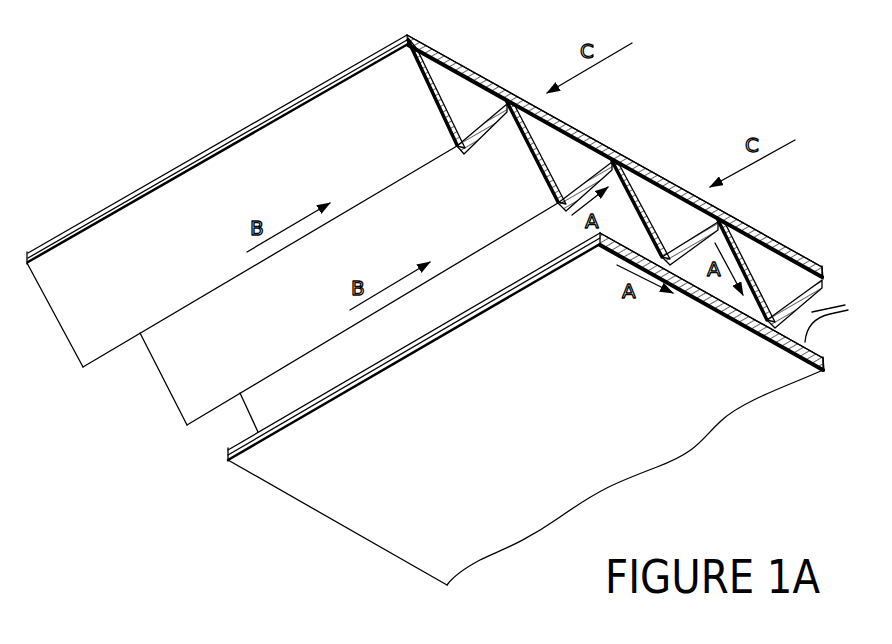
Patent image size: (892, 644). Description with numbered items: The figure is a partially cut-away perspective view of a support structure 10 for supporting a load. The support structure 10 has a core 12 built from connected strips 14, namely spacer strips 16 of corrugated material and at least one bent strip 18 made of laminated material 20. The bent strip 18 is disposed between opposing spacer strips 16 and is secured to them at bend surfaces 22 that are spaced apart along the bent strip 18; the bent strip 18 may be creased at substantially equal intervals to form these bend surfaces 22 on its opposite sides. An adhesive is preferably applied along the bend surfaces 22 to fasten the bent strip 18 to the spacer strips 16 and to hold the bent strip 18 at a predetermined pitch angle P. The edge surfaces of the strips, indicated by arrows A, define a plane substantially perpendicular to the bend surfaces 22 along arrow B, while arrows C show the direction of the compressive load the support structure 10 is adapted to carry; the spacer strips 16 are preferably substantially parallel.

The support structure 10 is at (638, 196).
The core 12 is at (795, 220).
The connected strips 14 is at (826, 276).
The spacer strips 16 is at (405, 35).
The bent strip 18 is at (275, 168).
The laminated material 20 is at (438, 100).
The bend surfaces 22 is at (113, 353).
The pitch angle P is at (481, 138).